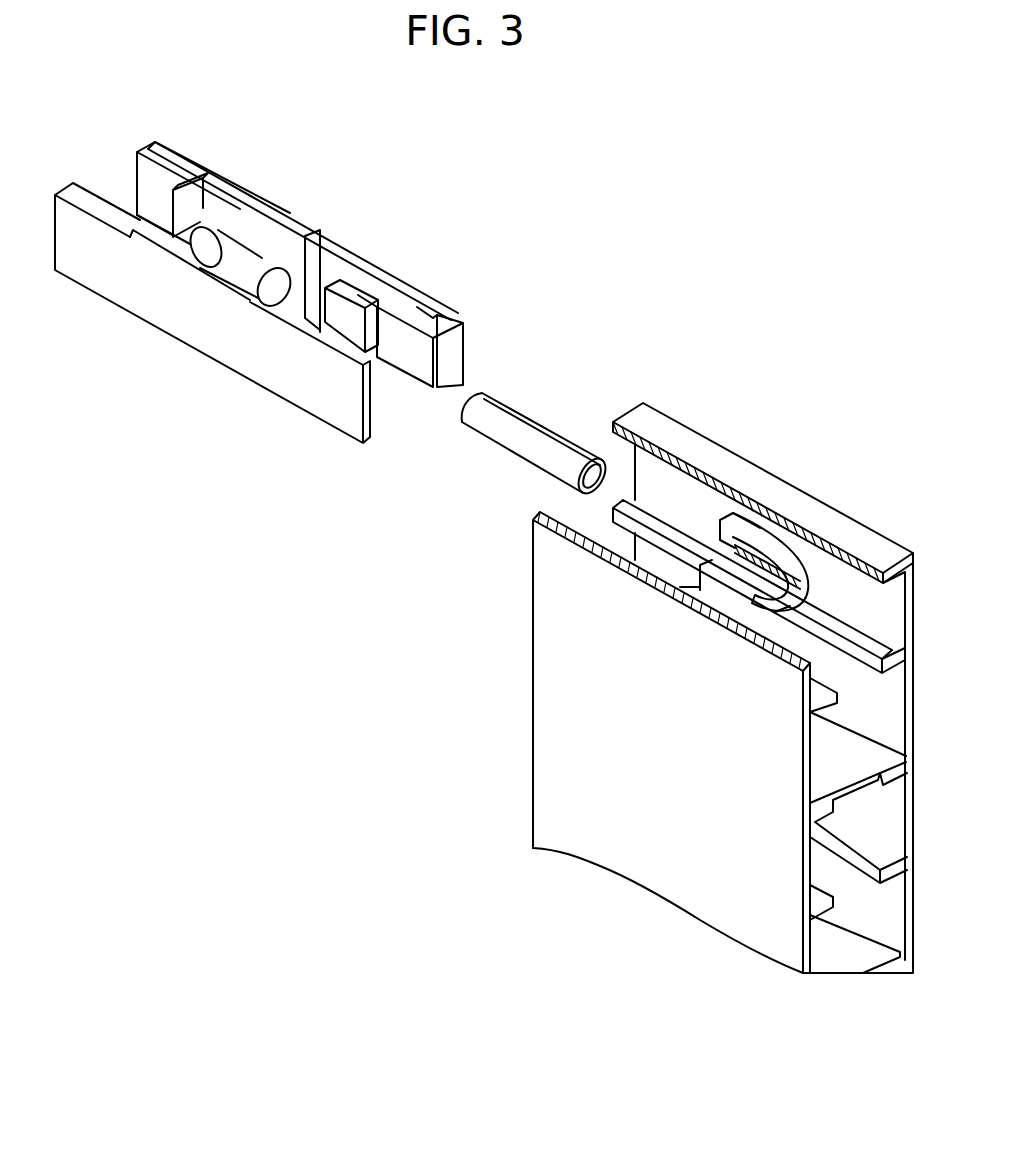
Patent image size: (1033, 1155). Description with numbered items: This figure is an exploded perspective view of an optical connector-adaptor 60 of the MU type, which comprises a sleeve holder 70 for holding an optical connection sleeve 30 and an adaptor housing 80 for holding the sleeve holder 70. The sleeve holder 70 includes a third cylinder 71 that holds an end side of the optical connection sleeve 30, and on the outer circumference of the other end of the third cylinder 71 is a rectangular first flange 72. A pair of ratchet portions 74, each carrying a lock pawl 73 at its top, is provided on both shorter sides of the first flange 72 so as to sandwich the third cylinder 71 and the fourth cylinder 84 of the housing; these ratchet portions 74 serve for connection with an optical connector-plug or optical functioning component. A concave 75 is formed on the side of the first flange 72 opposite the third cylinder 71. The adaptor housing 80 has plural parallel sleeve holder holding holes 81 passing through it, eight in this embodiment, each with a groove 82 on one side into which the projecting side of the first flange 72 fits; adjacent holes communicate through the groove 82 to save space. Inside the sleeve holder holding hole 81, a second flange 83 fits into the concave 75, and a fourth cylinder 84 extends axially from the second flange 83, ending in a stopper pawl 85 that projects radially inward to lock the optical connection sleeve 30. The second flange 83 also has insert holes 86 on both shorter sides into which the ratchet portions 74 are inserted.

The optical connection sleeve 30 is at (510, 442).
The optical connector-adaptor 60 is at (793, 320).
The sleeve holder 70 is at (310, 240).
The third cylinder 71 is at (250, 198).
The first flange 72 is at (213, 267).
The lock pawl 73 is at (277, 210).
The ratchet portion 74 is at (175, 157).
The concave 75 is at (267, 307).
The adaptor housing 80 is at (703, 447).
The sleeve holder holding hole 81 is at (647, 468).
The groove 82 is at (607, 513).
The second flange 83 is at (722, 600).
The fourth cylinder 84 is at (770, 547).
The stopper pawl 85 is at (777, 612).
The insert hole 86 is at (700, 583).